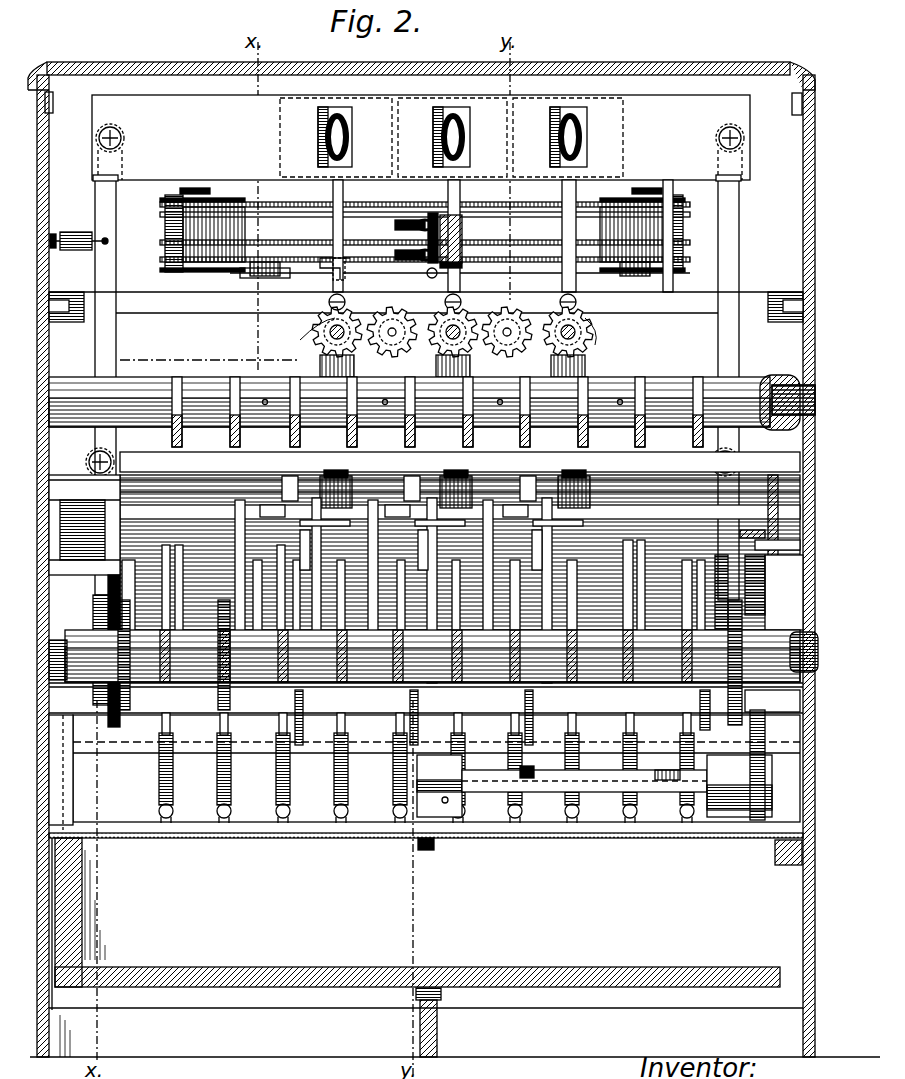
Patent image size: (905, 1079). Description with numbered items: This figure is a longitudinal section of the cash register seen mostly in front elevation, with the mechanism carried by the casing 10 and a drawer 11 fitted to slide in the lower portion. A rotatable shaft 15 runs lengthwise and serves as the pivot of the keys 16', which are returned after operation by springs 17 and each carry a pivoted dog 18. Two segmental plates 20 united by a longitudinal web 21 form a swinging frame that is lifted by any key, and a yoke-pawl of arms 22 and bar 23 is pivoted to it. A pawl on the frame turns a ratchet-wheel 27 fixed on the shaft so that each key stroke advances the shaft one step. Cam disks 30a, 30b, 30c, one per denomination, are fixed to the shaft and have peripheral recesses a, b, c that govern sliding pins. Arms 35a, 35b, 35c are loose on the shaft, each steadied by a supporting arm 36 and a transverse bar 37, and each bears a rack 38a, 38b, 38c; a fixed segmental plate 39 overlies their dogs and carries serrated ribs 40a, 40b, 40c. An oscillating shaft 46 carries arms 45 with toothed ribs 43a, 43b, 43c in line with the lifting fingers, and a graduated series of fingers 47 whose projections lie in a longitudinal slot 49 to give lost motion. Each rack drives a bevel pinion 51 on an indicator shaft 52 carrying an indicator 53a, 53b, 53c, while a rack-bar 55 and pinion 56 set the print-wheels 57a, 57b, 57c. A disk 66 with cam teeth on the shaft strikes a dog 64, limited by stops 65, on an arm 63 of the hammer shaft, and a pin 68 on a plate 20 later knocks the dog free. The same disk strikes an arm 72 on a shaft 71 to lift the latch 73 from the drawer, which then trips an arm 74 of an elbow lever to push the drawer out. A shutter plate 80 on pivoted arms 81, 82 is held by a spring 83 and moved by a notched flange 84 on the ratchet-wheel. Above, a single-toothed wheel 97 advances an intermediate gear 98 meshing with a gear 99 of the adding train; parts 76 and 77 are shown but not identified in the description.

The casing 10 is at (803, 276).
The drawer 11 is at (297, 967).
The shaft 15 is at (812, 645).
The key 16' is at (432, 669).
The spring 17 is at (173, 764).
The dog 18 is at (178, 560).
The segmental plate 20 is at (128, 560).
The longitudinal web 21 is at (165, 565).
The arm 22 is at (130, 708).
The longitudinal bar 23 is at (268, 712).
The ratchet-wheel 27 is at (118, 730).
The cam disk 30a is at (316, 717).
The cam disk 30b is at (432, 717).
The cam disk 30c is at (546, 717).
The arm 35a is at (326, 550).
The arm 35b is at (443, 550).
The arm 35c is at (556, 550).
The supporting arm 36 is at (250, 530).
The transverse bar 37 is at (272, 510).
The rack 38a is at (330, 480).
The rack 38b is at (465, 473).
The rack 38c is at (585, 473).
The fixed segmental plate 39 is at (695, 505).
The serrated rib 40a is at (328, 525).
The serrated rib 40b is at (444, 525).
The serrated rib 40c is at (572, 528).
The toothed rib 43a is at (282, 495).
The toothed rib 43b is at (412, 495).
The toothed rib 43c is at (530, 495).
The arm 45 is at (240, 435).
The shaft 46 is at (792, 385).
The finger 47 is at (182, 432).
The slot 49 is at (770, 380).
The bevel pinion 51 is at (355, 495).
The indicator shaft 52 is at (333, 191).
The indicator 53a is at (342, 110).
The indicator 53b is at (460, 110).
The indicator 53c is at (578, 110).
The rack-bar 55 is at (525, 223).
The pinion 56 is at (418, 212).
The print-wheel 57a is at (462, 265).
The print-wheel 57b is at (462, 227).
The print-wheel 57c is at (395, 215).
The arm 63 is at (768, 497).
The dog 64 is at (774, 592).
The stop 65 is at (760, 540).
The disk 66 is at (772, 699).
The pin 68 is at (768, 545).
The shaft 71 is at (610, 792).
The arm 72 is at (765, 732).
The latch 73 is at (436, 846).
The arm of elbow lever 74 is at (417, 771).
The drum 76 is at (424, 234).
The gear wheel 77 is at (170, 226).
The shutter plate 80 is at (421, 137).
The pivoted arm 81 is at (116, 278).
The pivoted arm 82 is at (718, 334).
The spring 83 is at (74, 236).
The notched flange 84 is at (93, 698).
The single-toothed wheel 97 is at (440, 350).
The intermediate ten-toothed gear 98 is at (385, 352).
The ten-toothed gear 99 is at (470, 360).
The peripheral recess a is at (328, 720).
The peripheral recess b is at (440, 720).
The peripheral recess c is at (555, 720).